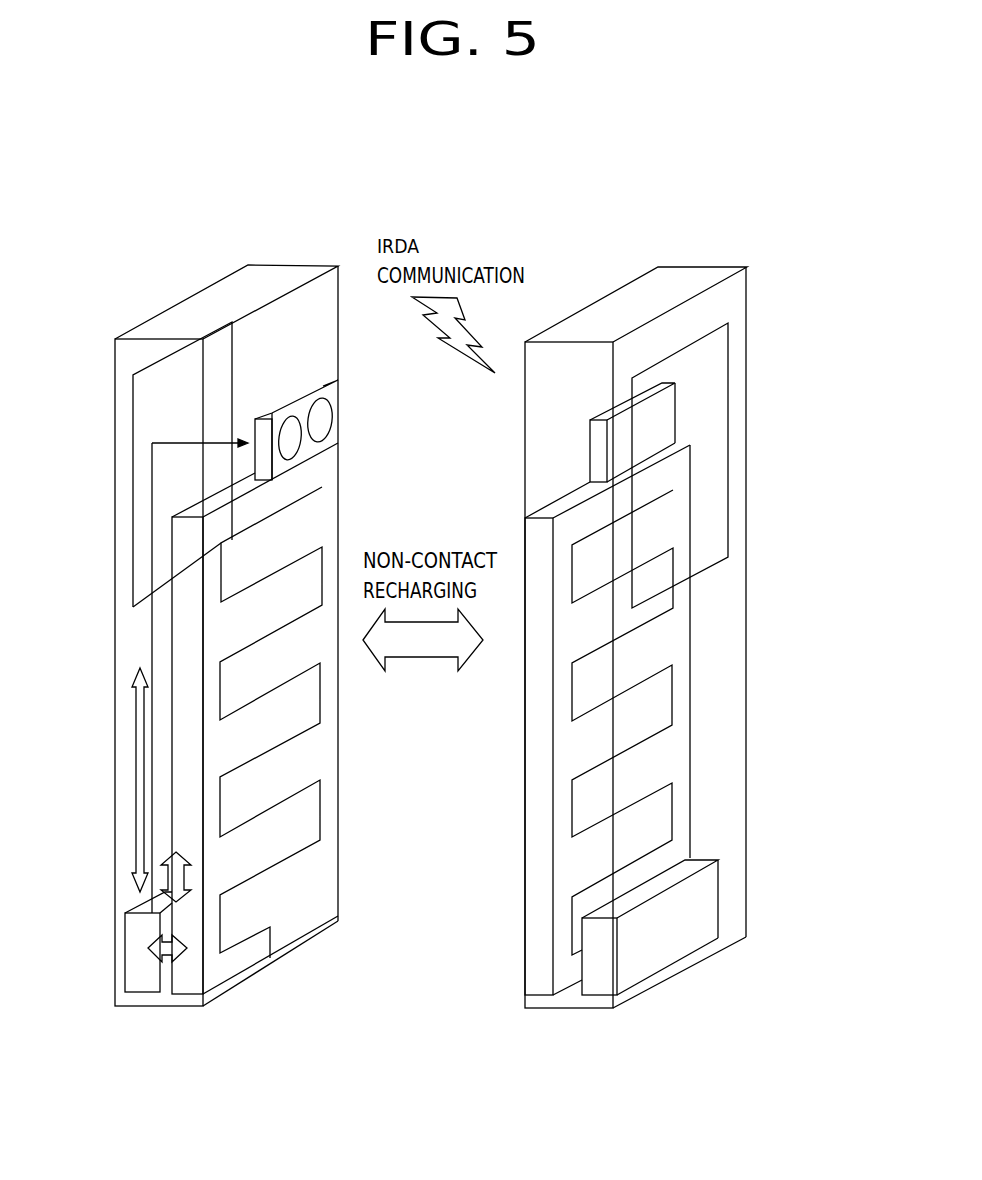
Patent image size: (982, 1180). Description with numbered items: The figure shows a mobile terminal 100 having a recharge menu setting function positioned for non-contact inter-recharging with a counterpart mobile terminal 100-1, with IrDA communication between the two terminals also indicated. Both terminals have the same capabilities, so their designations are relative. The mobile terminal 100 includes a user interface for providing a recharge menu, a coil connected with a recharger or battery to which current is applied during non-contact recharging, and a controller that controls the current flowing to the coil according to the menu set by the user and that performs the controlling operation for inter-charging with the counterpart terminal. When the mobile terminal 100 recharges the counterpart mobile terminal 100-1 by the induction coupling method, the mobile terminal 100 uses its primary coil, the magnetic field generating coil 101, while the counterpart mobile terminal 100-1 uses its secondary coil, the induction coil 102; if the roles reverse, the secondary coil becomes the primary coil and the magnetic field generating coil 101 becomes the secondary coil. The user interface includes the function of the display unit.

The mobile terminal 100 is at (288, 273).
The counterpart mobile terminal 100-1 is at (688, 278).
The magnetic field generating coil 101 is at (322, 808).
The induction coil 102 is at (672, 813).